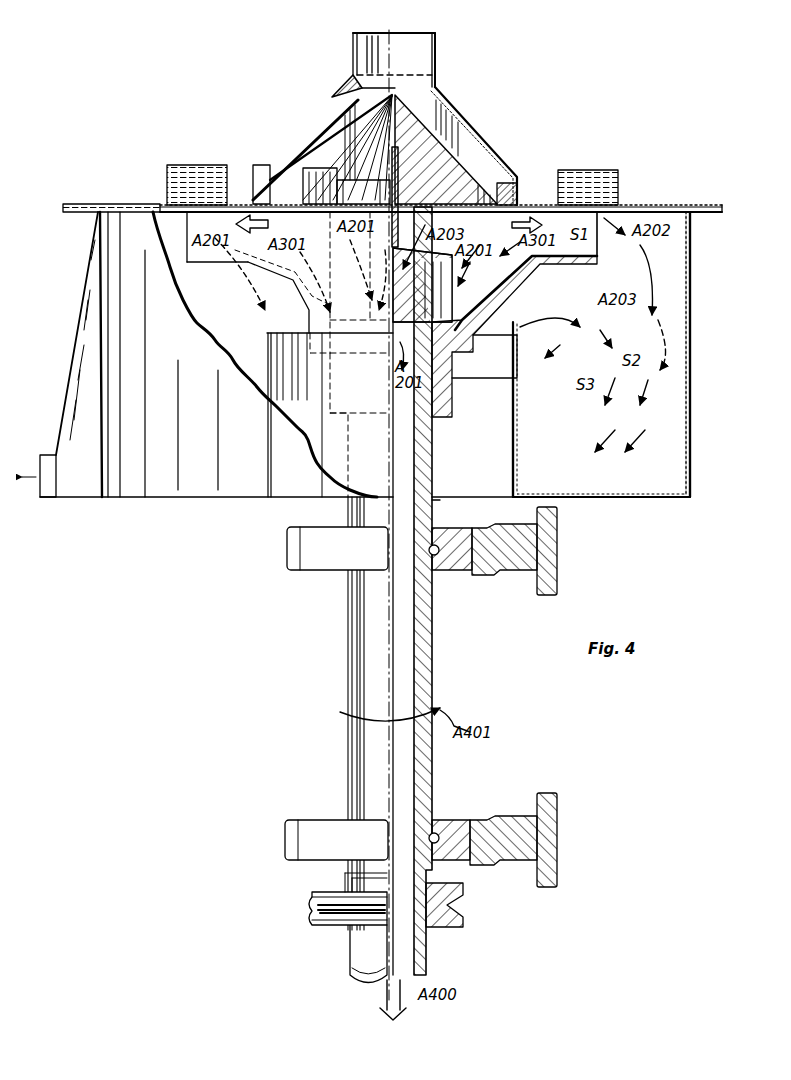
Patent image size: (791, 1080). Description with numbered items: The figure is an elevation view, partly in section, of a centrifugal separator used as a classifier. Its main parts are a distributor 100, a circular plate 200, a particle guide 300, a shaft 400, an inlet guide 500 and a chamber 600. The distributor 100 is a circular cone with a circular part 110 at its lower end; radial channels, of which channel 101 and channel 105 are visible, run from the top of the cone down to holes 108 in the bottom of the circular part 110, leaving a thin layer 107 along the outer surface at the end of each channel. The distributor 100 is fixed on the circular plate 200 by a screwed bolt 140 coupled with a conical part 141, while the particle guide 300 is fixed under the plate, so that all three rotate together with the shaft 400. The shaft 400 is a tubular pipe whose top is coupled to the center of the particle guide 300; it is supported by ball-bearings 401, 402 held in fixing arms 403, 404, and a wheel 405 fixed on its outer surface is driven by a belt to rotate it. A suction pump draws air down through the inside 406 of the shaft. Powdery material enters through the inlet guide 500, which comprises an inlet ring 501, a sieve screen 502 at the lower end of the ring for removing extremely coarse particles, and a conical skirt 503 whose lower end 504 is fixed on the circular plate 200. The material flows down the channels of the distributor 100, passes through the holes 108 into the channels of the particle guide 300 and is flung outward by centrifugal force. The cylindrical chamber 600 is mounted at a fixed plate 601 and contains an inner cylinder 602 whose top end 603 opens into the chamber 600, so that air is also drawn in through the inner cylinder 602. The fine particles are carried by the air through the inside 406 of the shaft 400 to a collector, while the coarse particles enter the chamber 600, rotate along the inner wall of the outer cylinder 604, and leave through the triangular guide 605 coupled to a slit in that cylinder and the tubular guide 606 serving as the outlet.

The distributor 100 is at (318, 130).
The channel 101 is at (340, 90).
The channel 105 is at (478, 160).
The thin layer 107 is at (484, 184).
The hole 108 is at (492, 212).
The circular part 110 is at (363, 192).
The screwed bolt 140 is at (398, 158).
The conical part 141 is at (422, 270).
The circular plate 200 is at (236, 204).
The particle guide 300 is at (522, 274).
The shaft 400 is at (432, 654).
The ball-bearing 401 is at (442, 572).
The ball-bearing 402 is at (324, 816).
The fixing arm 403 is at (500, 574).
The fixing arm 404 is at (506, 818).
The wheel 405 is at (320, 895).
The inside of the tubular shaft 406 is at (416, 489).
The inlet guide 500 is at (353, 36).
The inlet ring 501 is at (432, 38).
The sieve screen 502 is at (418, 72).
The conical skirt 503 is at (476, 116).
The lower end of the skirt 504 is at (530, 202).
The chamber 600 is at (151, 497).
The fixed plate 601 is at (80, 204).
The inner cylinder 602 is at (278, 332).
The top end of the inner cylinder 603 is at (486, 338).
The outer cylinder 604 is at (240, 497).
The triangular guide 605 is at (78, 330).
The tubular guide 606 is at (56, 499).